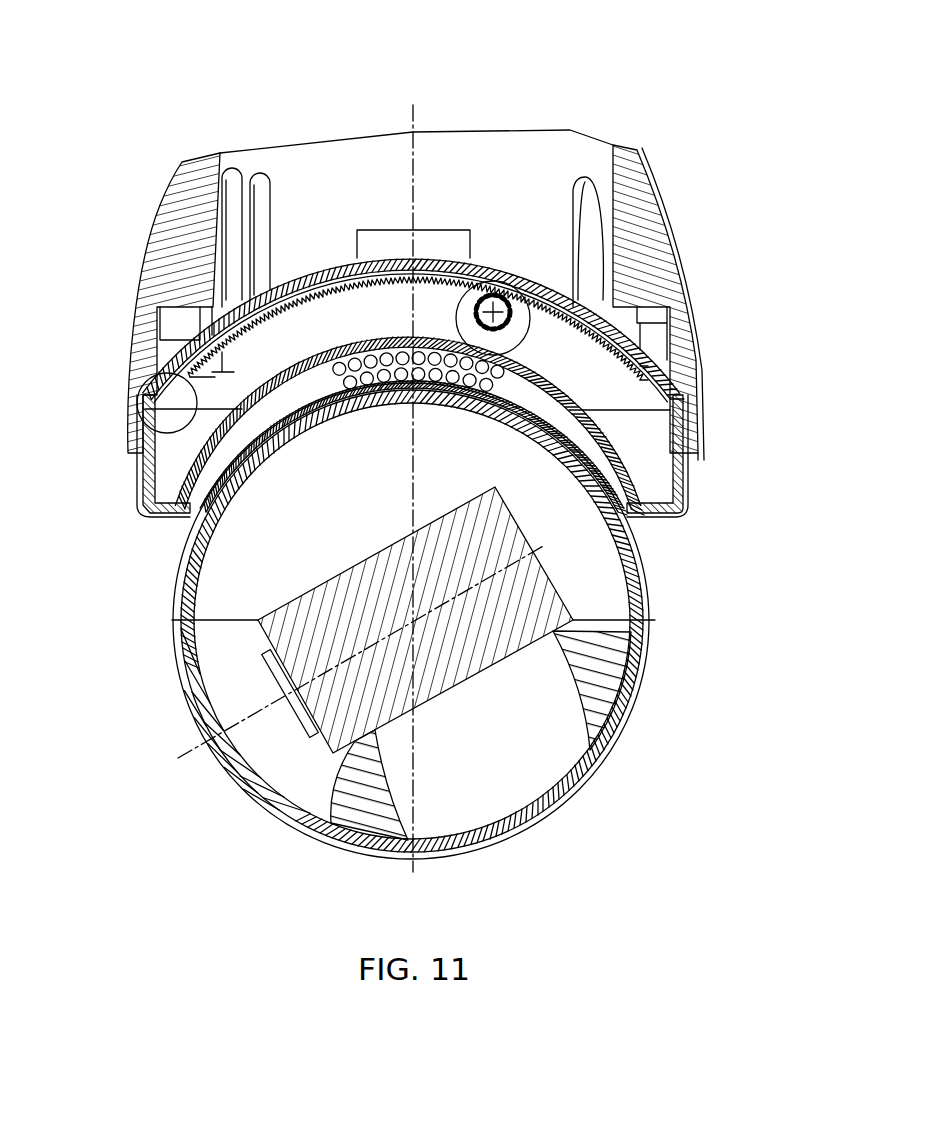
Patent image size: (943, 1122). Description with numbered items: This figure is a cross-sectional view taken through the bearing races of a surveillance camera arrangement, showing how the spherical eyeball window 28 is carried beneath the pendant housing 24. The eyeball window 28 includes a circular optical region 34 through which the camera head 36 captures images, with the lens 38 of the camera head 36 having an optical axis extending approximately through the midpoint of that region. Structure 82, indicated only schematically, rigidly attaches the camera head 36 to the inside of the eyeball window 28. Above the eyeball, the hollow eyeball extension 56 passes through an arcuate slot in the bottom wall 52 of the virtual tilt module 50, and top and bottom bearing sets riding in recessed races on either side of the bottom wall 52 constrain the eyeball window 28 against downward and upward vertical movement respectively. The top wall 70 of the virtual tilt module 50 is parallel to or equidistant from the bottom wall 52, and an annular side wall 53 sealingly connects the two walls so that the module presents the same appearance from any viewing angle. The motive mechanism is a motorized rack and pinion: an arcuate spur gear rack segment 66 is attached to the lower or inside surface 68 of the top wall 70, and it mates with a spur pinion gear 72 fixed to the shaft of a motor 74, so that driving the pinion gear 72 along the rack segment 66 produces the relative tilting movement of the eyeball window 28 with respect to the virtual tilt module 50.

The pendant housing 24 is at (651, 229).
The spherical eyeball window 28 is at (597, 763).
The circular optical region 34 is at (217, 760).
The camera head 36 is at (338, 585).
The lens 38 is at (295, 723).
The virtual tilt module 50 is at (690, 472).
The bottom wall 52 is at (643, 572).
The annular side wall 53 is at (140, 480).
The hollow eyeball extension 56 is at (370, 347).
The arcuate spur gear rack segment 66 is at (320, 292).
The inside surface of top wall 68 is at (145, 418).
The top wall 70 is at (284, 288).
The spur pinion gear 72 is at (503, 305).
The motor 74 is at (512, 338).
The attachment structure 82 is at (587, 720).